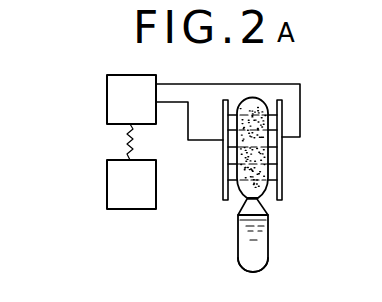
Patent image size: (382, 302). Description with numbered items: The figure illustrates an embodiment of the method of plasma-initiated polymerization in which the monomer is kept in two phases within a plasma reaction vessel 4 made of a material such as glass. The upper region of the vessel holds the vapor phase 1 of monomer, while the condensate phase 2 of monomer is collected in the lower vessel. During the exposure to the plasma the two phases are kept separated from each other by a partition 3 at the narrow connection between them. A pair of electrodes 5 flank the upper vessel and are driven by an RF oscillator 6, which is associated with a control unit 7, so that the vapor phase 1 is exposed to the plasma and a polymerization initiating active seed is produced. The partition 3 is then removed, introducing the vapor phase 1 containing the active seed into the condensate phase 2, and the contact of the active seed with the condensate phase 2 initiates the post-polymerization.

The vapor phase 1 is at (254, 97).
The condensate phase 2 is at (264, 251).
The partition 3 is at (243, 203).
The plasma reaction vessel 4 is at (240, 262).
The electrode 5 is at (223, 183).
The RF oscillator 6 is at (112, 100).
The control unit 7 is at (112, 186).